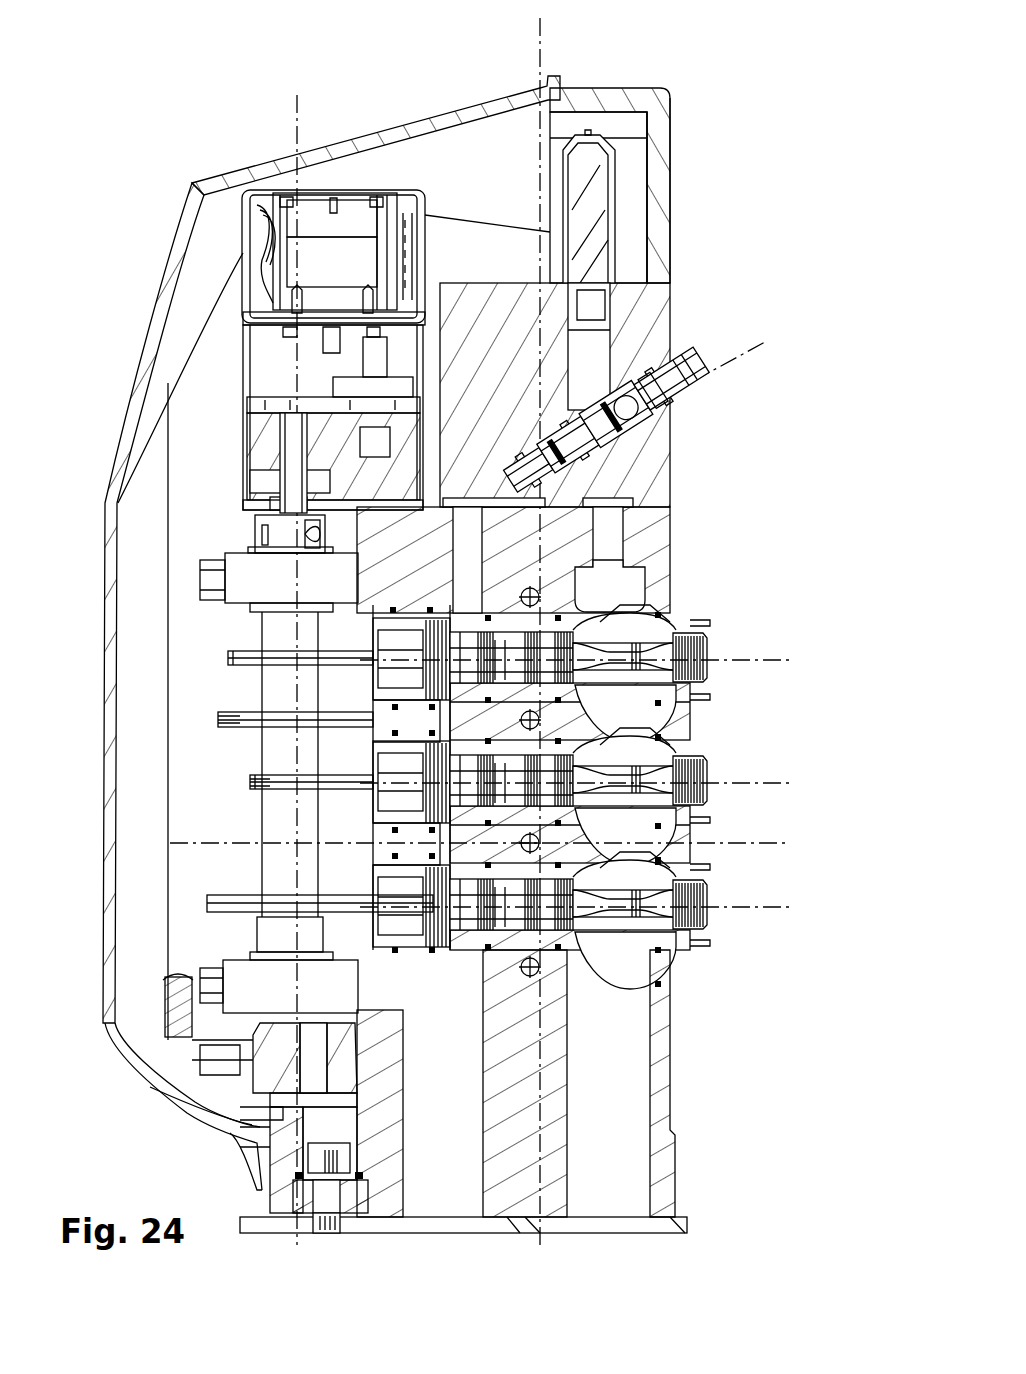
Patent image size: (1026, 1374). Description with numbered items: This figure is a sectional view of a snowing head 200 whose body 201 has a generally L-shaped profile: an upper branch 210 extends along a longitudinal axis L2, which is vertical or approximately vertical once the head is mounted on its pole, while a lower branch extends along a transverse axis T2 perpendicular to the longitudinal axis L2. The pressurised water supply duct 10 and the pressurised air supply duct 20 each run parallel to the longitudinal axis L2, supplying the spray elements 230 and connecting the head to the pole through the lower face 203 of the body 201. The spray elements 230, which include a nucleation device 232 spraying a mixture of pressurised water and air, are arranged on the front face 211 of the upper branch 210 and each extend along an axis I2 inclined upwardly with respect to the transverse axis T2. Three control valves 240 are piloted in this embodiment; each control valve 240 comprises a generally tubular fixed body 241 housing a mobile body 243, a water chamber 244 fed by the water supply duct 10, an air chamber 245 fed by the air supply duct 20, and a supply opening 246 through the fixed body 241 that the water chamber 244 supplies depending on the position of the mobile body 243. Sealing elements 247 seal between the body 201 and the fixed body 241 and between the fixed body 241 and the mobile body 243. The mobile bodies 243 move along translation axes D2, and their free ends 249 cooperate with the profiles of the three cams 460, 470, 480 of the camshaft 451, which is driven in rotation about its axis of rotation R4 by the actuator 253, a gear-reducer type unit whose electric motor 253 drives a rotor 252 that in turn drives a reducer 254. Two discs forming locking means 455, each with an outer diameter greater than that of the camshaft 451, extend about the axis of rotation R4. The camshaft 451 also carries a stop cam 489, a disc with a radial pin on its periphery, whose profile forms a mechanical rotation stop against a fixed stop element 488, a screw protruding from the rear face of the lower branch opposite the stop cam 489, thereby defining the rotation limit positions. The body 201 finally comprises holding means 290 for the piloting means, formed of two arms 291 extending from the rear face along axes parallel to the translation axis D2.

The pressurised water supply duct 10 is at (640, 1225).
The pressurised air supply duct 20 is at (460, 1240).
The snowing head 200 is at (220, 212).
The body 201 is at (665, 88).
The lower face 203 is at (375, 1240).
The upper branch 210 is at (675, 108).
The front face 211 is at (667, 173).
The spray elements 230 is at (690, 338).
The nucleation device 232 is at (707, 387).
The control valve 240 is at (707, 667).
The fixed body 241 is at (685, 605).
The mobile body 243 is at (497, 643).
The water chamber 244 is at (680, 717).
The air chamber 245 is at (700, 619).
The supply opening 246 is at (560, 613).
The sealing elements 247 is at (430, 610).
The free end 249 is at (377, 653).
The rotor 252 is at (373, 362).
The actuator 253 is at (243, 263).
The reducer 254 is at (243, 437).
The holding means 290 is at (232, 547).
The arms 291 is at (237, 572).
The camshaft 451 is at (263, 868).
The locking means 455 is at (268, 612).
The cam 460 is at (265, 920).
The cam 470 is at (237, 790).
The cam 480 is at (238, 663).
The fixed stop element 488 is at (373, 713).
The stop cam 489 is at (220, 718).
The axis of rotation R4 is at (297, 125).
The longitudinal axis L2 is at (540, 53).
The spray element axis I2 is at (666, 398).
The translation axis D2 is at (780, 658).
The transverse axis T2 is at (775, 842).